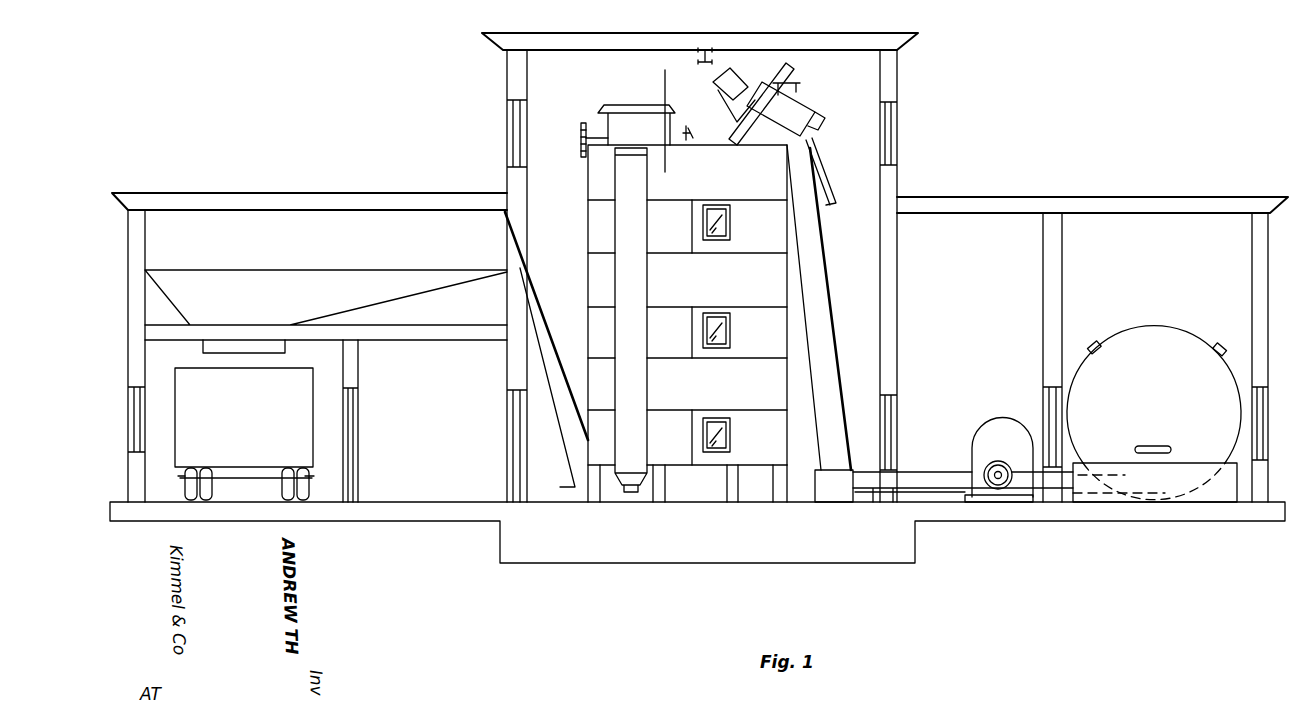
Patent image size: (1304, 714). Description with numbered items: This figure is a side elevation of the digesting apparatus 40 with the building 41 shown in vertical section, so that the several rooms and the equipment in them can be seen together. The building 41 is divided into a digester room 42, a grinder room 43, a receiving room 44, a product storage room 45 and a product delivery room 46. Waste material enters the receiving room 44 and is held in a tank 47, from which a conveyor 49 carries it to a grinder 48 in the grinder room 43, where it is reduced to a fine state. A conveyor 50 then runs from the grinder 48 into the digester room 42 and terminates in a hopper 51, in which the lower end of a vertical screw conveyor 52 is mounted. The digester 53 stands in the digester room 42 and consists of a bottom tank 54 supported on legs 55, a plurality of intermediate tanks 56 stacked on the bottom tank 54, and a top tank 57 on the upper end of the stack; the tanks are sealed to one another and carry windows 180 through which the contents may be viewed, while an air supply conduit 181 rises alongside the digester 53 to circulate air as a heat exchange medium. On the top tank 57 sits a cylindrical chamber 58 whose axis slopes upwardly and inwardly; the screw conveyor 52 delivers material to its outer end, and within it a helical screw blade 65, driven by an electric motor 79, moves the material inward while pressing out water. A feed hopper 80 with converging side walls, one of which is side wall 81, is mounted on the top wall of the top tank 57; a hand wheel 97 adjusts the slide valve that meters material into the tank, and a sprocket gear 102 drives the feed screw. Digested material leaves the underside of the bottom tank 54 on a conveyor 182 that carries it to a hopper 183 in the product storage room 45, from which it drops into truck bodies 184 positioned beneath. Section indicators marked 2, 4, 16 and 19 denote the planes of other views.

The section line 2 is at (558, 132).
The section line 4 is at (585, 252).
The section line 16 is at (675, 91).
The section line 19 is at (745, 115).
The digesting apparatus 40 is at (947, 154).
The building 41 is at (893, 72).
The digester room 42 is at (530, 78).
The grinder room 43 is at (990, 218).
The receiving room 44 is at (1115, 216).
The product storage room 45 is at (216, 212).
The product delivery room 46 is at (332, 493).
The tank 47 is at (1157, 328).
The grinder 48 is at (993, 419).
The conveyor 49 is at (1066, 486).
The conveyor 50 is at (917, 472).
The hopper 51 is at (838, 492).
The vertical screw conveyor 52 is at (838, 385).
The digester 53 is at (589, 86).
The bottom tank 54 is at (680, 462).
The legs 55 is at (785, 502).
The intermediate tanks 56 is at (762, 235).
The top tank 57 is at (579, 186).
The cylindrical chamber 58 is at (808, 112).
The helical screw blade 65 is at (660, 502).
The electric motor 79 is at (740, 86).
The feed hopper 80 is at (631, 84).
The side wall 81 is at (676, 112).
The hand wheel 97 is at (690, 136).
The sprocket gear 102 is at (580, 148).
The windows 180 is at (718, 215).
The air supply conduit 181 is at (620, 283).
The conveyor 182 is at (563, 428).
The hopper 183 is at (420, 290).
The truck bodies 184 is at (244, 434).